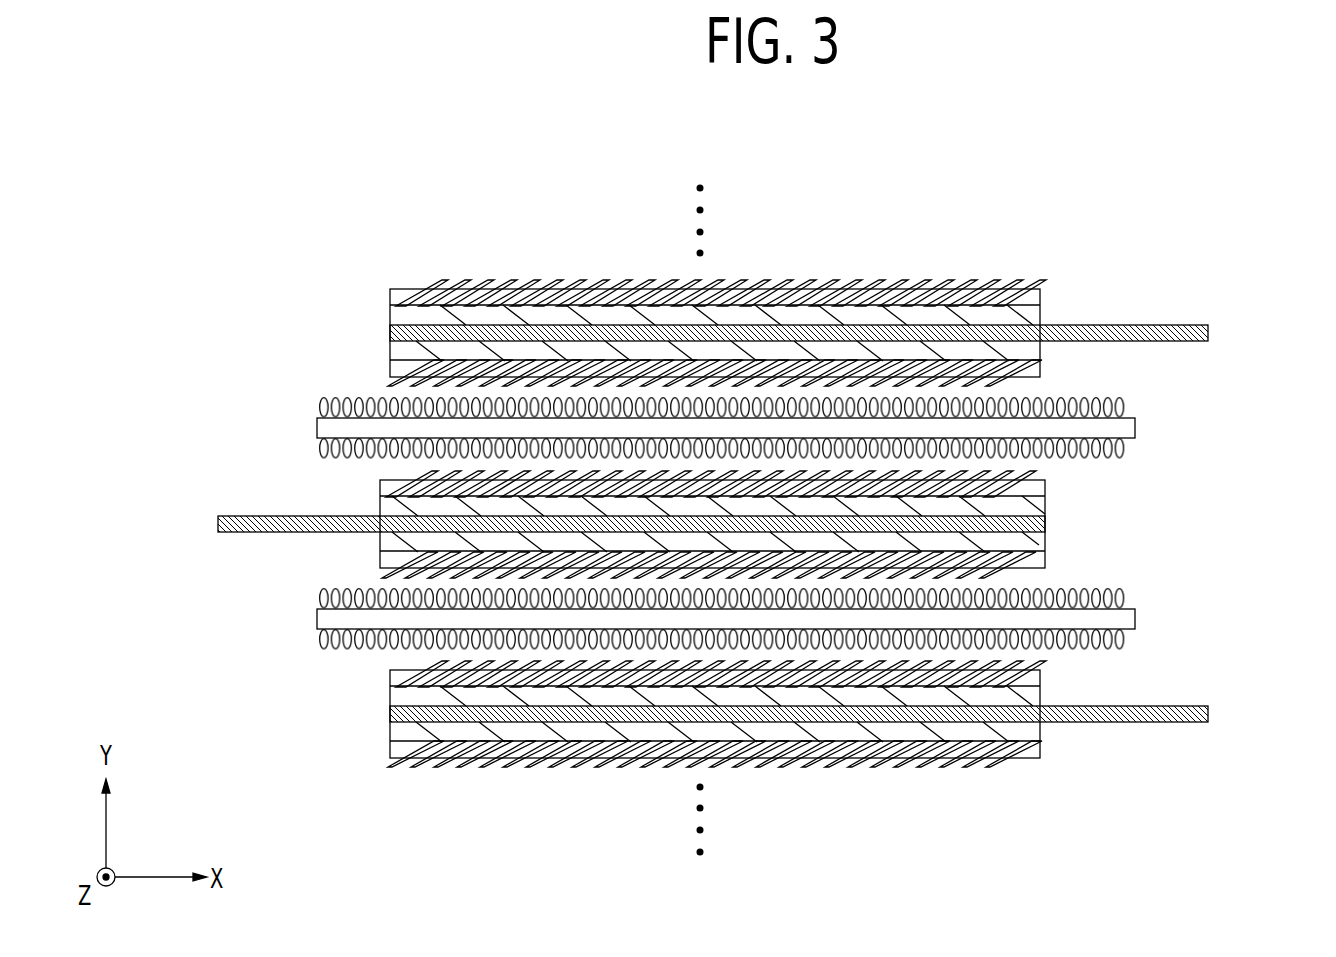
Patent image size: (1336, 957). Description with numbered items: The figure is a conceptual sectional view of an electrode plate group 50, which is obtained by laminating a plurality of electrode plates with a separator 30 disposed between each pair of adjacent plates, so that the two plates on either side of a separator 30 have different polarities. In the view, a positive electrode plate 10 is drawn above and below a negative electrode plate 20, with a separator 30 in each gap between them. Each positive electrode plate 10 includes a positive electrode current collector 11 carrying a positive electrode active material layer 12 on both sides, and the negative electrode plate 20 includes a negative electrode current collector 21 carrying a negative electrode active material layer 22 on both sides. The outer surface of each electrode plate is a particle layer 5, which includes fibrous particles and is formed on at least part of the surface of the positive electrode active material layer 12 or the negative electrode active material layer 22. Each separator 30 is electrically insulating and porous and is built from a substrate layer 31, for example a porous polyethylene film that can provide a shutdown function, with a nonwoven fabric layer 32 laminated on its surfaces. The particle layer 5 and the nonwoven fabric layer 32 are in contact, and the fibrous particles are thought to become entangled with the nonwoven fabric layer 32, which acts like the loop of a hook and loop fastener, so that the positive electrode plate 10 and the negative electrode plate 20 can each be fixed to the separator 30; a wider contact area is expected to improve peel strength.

The electrode plate group 50 is at (722, 469).
The positive electrode plate 10 is at (1283, 409).
The positive electrode current collector 11 is at (1208, 333).
The positive electrode active material layer 12 is at (1040, 315).
The particle layer 5 is at (1040, 298).
The negative electrode plate 20 is at (1283, 600).
The negative electrode current collector 21 is at (1045, 523).
The negative electrode active material layer 22 is at (1045, 505).
The separator 30 is at (668, 522).
The substrate layer 31 is at (317, 428).
The nonwoven fabric layer 32 is at (242, 467).